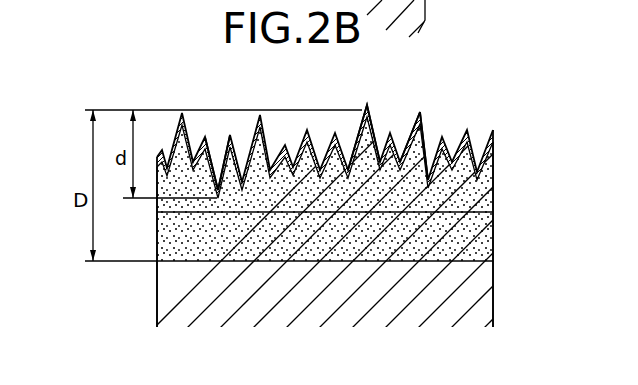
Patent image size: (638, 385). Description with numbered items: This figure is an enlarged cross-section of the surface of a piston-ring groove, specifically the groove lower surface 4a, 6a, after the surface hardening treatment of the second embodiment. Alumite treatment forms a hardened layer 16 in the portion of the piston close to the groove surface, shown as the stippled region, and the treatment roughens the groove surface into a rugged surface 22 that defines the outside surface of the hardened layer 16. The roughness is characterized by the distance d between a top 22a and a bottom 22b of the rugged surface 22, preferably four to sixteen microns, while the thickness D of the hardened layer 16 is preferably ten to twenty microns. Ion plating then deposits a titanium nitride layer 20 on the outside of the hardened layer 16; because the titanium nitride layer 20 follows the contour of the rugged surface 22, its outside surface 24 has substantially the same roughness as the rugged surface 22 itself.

The hardened layer 16 is at (437, 233).
The groove lower surface 4a is at (376, 189).
The groove lower surface 6a is at (455, 211).
The rugged surface 22 is at (433, 130).
The top of rugged surface 22a is at (369, 106).
The bottom of rugged surface 22b is at (217, 199).
The outside surface of titanium nitride layer 24 is at (431, 128).
The titanium nitride layer 20 is at (479, 150).